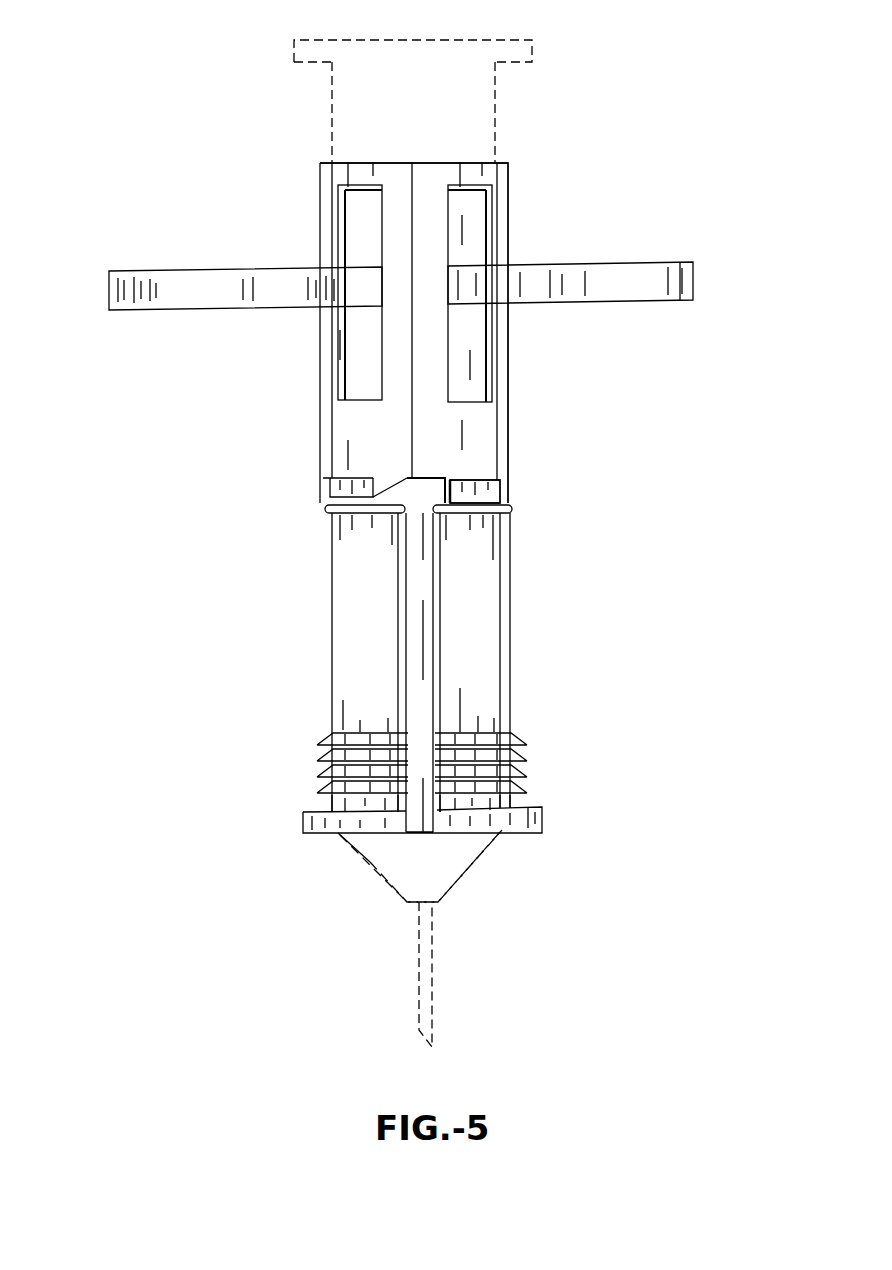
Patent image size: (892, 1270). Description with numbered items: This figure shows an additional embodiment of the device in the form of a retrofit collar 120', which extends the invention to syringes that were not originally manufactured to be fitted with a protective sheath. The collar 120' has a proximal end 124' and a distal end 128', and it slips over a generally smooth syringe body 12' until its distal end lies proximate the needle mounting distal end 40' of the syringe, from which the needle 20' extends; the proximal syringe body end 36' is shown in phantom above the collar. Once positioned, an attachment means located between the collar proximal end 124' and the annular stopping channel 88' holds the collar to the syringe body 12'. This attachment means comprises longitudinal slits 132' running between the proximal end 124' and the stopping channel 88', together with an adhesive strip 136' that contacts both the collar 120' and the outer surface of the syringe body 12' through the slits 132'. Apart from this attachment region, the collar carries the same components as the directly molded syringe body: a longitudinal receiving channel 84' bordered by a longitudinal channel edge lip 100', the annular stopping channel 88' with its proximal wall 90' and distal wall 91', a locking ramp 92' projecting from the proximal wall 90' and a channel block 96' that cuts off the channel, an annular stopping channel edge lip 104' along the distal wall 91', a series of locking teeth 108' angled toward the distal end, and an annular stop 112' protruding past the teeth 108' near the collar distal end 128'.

The proximal syringe body end 36' is at (380, 35).
The syringe body 12' is at (459, 271).
The collar proximal end 124' is at (363, 311).
The retrofit collar 120' is at (472, 333).
The longitudinal slits 132' is at (396, 293).
The adhesive strip 136' is at (406, 322).
The locking ramp 92' is at (337, 462).
The channel block 96' is at (491, 465).
The proximal wall 90' is at (522, 478).
The annular stopping channel 88' is at (427, 498).
The distal wall 91' is at (503, 528).
The annular stopping channel edge lip 104' is at (322, 535).
The longitudinal channel edge lip 100' is at (420, 662).
The longitudinal receiving channel 84' is at (360, 672).
The locking tooth 108' is at (474, 772).
The annular stop 112' is at (469, 819).
The collar distal end 128' is at (385, 866).
The needle mounting distal end 40' is at (448, 880).
The needle 20' is at (469, 974).